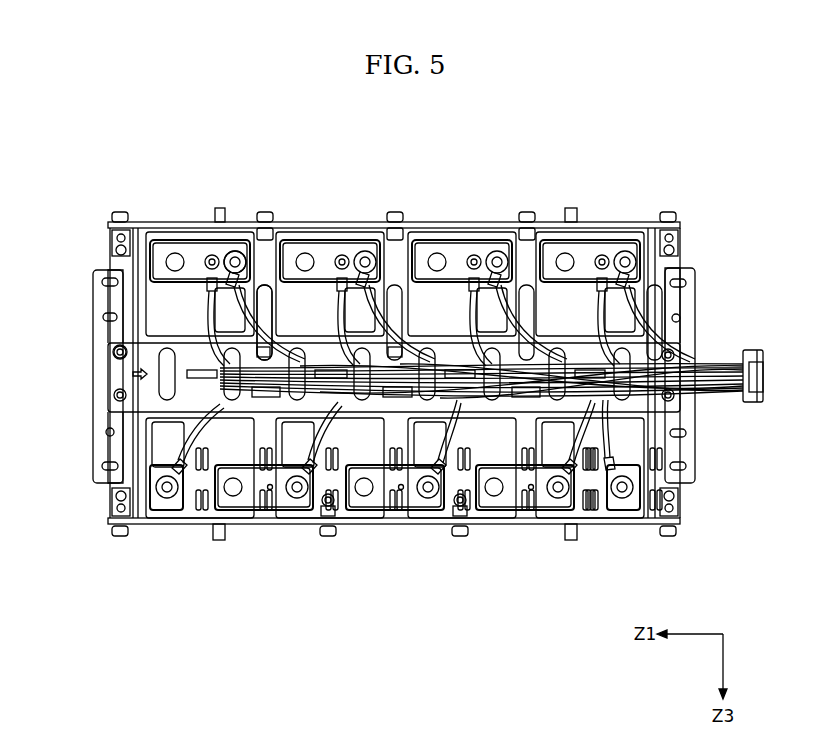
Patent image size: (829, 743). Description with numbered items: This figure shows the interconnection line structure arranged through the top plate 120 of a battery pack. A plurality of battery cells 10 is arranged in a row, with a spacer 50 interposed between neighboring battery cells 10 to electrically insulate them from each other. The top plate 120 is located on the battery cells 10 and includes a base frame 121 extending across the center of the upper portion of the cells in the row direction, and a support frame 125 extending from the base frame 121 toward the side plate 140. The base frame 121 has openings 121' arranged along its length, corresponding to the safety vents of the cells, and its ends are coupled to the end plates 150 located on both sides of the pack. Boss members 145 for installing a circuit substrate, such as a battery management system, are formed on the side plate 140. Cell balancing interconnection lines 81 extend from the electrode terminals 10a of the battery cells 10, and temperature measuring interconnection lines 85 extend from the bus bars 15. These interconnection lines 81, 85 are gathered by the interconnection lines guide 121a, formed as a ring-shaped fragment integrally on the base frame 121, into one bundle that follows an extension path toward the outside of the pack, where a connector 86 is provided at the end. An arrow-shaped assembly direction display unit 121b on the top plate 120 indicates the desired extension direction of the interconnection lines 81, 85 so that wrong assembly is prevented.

The battery cell 10 is at (627, 519).
The electrode terminal 10a is at (232, 256).
The bus bar 15 is at (180, 248).
The spacer 50 is at (590, 517).
The cell balancing interconnection line 81 is at (288, 250).
The temperature measuring interconnection line 85 is at (195, 303).
The connector 86 is at (756, 403).
The top plate 120 is at (672, 330).
The base frame 121 is at (363, 377).
The opening 121' is at (85, 348).
The interconnection lines guide 121a is at (172, 345).
The assembly direction display unit 121b is at (137, 386).
The support frame 125 is at (262, 250).
The side plate 140 is at (425, 232).
The boss member 145 is at (218, 541).
The end plate 150 is at (117, 488).